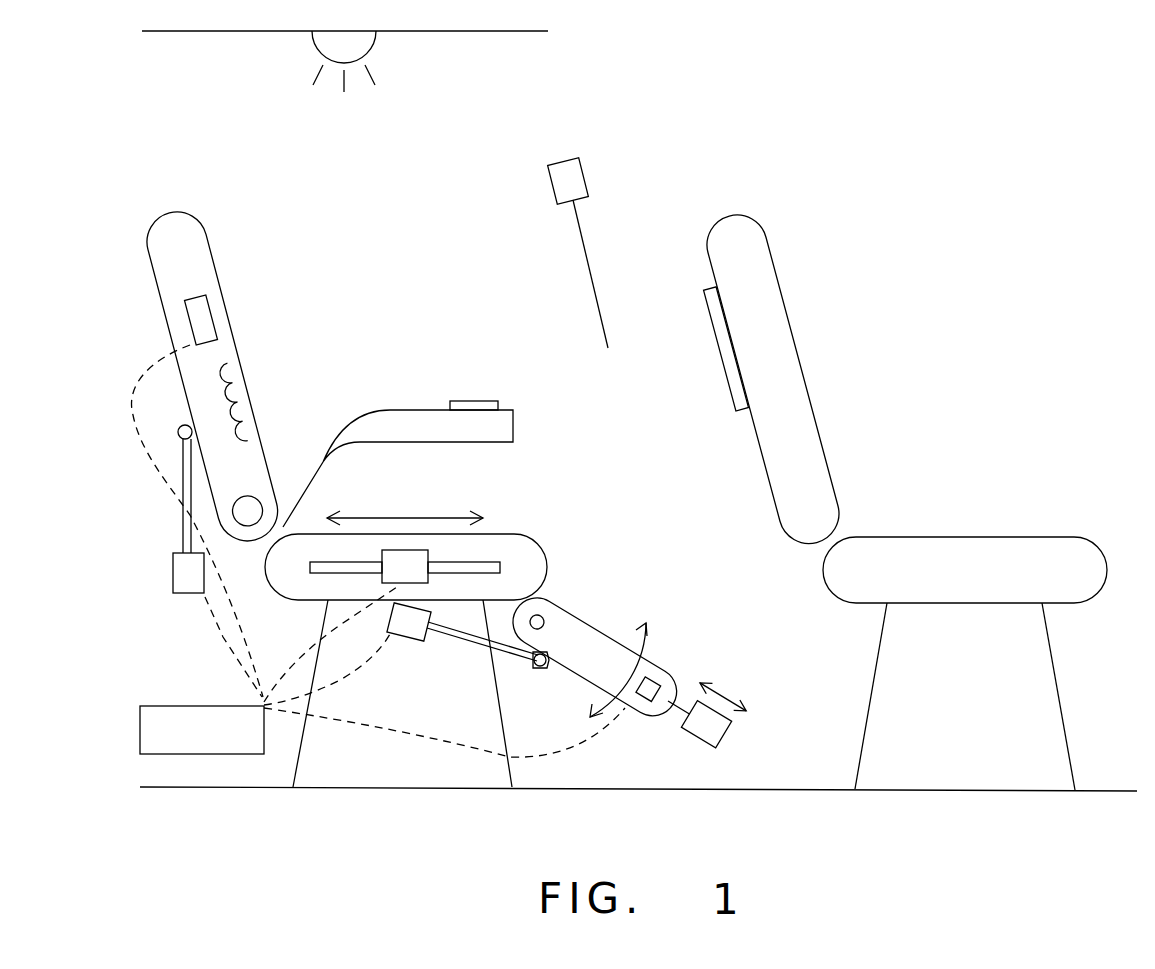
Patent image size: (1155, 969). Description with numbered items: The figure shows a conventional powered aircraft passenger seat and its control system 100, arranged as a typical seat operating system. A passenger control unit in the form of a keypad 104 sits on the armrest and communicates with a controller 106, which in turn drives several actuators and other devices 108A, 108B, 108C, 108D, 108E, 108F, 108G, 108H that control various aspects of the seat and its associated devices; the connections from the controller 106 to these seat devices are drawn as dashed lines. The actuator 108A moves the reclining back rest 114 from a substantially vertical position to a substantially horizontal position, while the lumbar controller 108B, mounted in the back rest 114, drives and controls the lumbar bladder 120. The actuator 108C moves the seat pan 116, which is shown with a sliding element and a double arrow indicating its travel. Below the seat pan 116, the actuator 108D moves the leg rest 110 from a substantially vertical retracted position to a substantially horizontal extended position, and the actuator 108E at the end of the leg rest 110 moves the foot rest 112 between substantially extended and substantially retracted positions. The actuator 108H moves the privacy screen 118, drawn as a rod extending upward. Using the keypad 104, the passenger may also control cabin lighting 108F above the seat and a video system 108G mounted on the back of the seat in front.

The seat system 100 is at (667, 167).
The keypad 104 is at (480, 405).
The controller 106 is at (140, 722).
The actuator 108A is at (172, 573).
The lumbar controller 108B is at (212, 315).
The actuator 108C is at (398, 550).
The actuator 108D is at (422, 645).
The actuator 108E is at (657, 680).
The cabin lighting 108F is at (370, 48).
The video system 108G is at (725, 382).
The actuator 108H is at (553, 184).
The leg rest 110 is at (573, 615).
The foot rest 112 is at (727, 735).
The reclining back rest 114 is at (158, 293).
The seat pan 116 is at (525, 537).
The privacy screen 118 is at (582, 243).
The lumbar bladder 120 is at (243, 400).